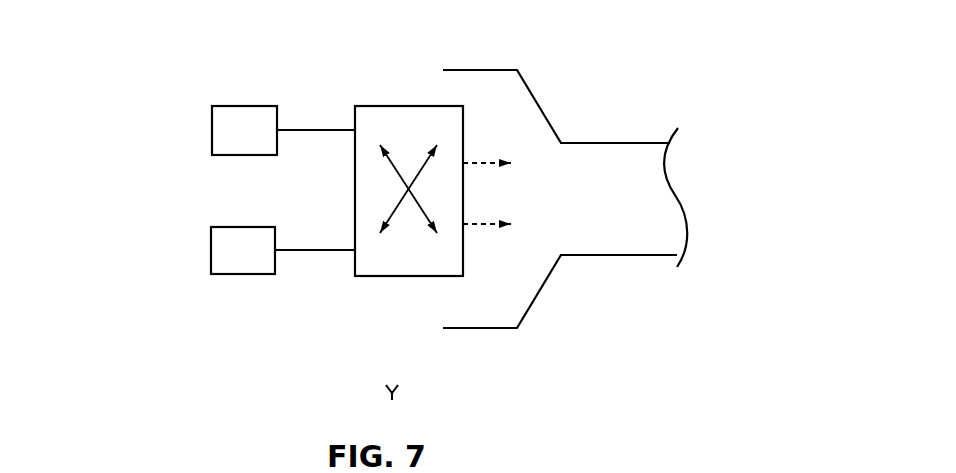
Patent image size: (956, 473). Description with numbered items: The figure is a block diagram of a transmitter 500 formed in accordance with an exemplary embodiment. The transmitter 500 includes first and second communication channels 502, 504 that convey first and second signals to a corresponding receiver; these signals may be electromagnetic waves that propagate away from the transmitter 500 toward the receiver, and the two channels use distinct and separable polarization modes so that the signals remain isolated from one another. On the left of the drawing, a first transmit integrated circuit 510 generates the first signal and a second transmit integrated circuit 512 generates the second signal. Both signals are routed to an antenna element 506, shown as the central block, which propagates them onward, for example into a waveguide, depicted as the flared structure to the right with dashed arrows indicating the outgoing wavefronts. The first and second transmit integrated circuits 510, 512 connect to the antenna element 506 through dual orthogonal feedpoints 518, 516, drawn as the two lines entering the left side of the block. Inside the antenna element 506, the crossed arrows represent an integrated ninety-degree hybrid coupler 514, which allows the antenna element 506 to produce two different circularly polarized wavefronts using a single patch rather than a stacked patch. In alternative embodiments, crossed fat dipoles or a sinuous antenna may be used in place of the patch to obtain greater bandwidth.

The transmitter 500 is at (435, 68).
The first communication channel 502 is at (188, 130).
The second communication channel 504 is at (188, 250).
The antenna element 506 is at (423, 172).
The first transmit integrated circuit 510 is at (253, 118).
The second transmit integrated circuit 512 is at (245, 268).
The integrated 90° hybrid coupler 514 is at (411, 263).
The orthogonal feedpoint 516 is at (355, 250).
The orthogonal feedpoint 518 is at (355, 128).